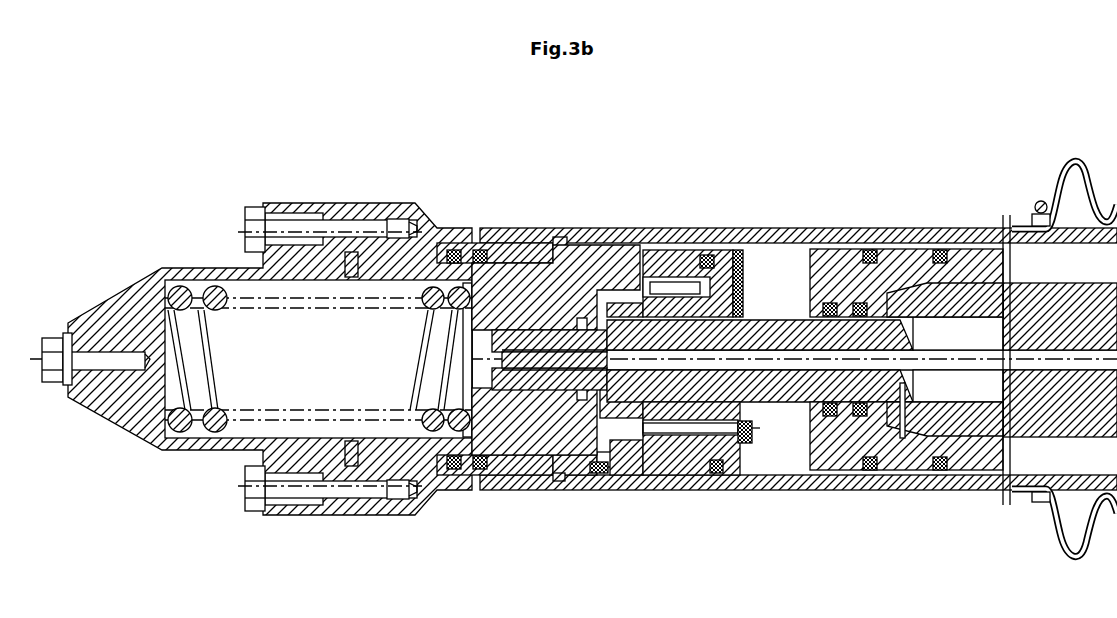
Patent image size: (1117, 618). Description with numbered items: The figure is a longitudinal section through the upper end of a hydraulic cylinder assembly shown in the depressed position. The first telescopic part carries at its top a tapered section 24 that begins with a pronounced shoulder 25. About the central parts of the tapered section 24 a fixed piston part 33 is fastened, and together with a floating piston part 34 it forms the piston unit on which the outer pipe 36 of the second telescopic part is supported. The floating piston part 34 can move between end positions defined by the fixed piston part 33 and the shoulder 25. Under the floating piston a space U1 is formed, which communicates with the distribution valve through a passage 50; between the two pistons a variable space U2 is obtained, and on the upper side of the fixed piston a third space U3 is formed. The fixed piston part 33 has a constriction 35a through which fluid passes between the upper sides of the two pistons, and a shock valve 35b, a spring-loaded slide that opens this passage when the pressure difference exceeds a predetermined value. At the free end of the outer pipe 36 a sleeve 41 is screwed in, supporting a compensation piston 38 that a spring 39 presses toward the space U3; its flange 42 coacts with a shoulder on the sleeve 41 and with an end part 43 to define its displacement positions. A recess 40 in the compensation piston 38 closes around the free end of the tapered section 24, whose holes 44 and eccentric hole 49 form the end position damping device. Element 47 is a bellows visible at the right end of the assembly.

The tapered section 24 is at (792, 343).
The shoulder 25 is at (893, 313).
The fixed piston part 33 is at (647, 246).
The floating piston part 34 is at (853, 287).
The constriction 35a is at (741, 488).
The shock valve 35b is at (740, 280).
The outer pipe 36 is at (790, 480).
The compensation piston 38 is at (557, 297).
The spring 39 is at (437, 285).
The recess 40 is at (498, 330).
The sleeve 41 is at (467, 258).
The flange 42 is at (348, 272).
The end part 43 is at (307, 258).
The holes 44 is at (560, 395).
The bellows 47 is at (1076, 170).
The eccentric hole 49 is at (537, 392).
The passage 50 is at (922, 420).
The space U1 is at (1061, 268).
The variable space U2 is at (773, 284).
The third space U3 is at (598, 395).